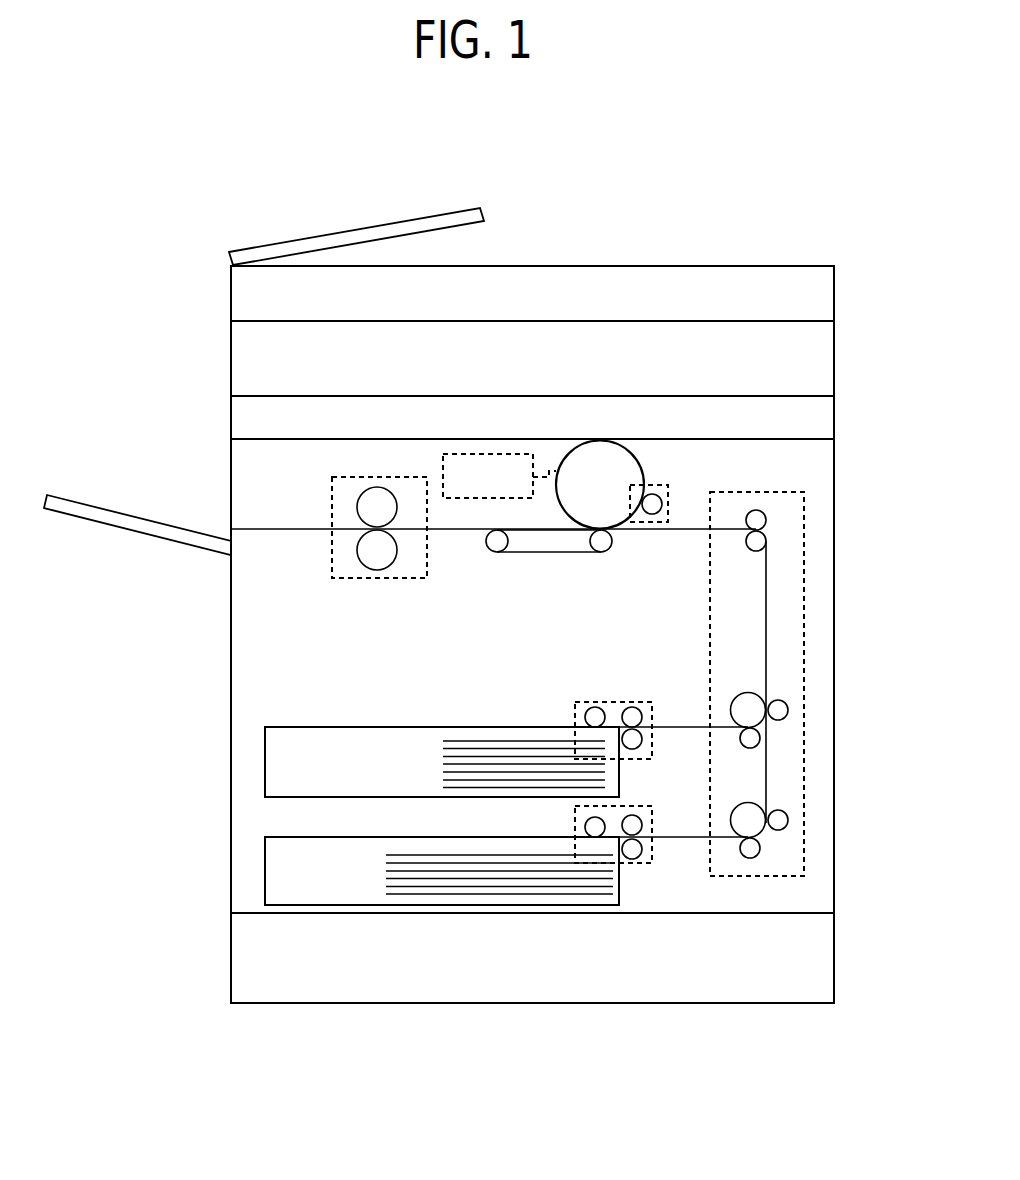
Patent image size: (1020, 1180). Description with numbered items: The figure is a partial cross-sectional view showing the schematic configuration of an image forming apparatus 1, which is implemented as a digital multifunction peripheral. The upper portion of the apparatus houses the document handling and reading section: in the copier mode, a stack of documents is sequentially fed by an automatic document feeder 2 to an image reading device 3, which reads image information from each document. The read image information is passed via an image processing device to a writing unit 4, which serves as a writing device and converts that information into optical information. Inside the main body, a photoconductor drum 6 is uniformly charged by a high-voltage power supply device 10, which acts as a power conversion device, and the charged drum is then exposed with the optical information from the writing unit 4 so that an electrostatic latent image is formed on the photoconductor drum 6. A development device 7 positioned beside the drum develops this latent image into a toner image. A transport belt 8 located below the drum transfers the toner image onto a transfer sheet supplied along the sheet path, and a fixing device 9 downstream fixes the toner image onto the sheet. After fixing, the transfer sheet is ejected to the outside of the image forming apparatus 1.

The image forming apparatus 1 is at (650, 160).
The automatic document feeder 2 is at (818, 310).
The image reading device 3 is at (818, 378).
The writing unit 4 is at (818, 425).
The photoconductor drum 6 is at (642, 468).
The development device 7 is at (668, 501).
The transport belt 8 is at (540, 553).
The fixing device 9 is at (353, 578).
The high-voltage power supply device 10 is at (442, 461).